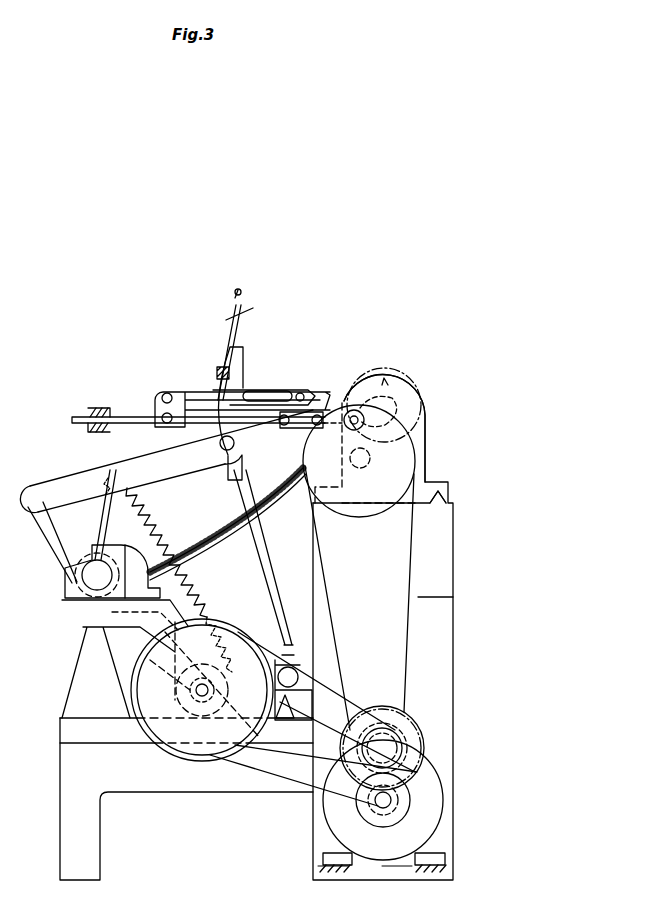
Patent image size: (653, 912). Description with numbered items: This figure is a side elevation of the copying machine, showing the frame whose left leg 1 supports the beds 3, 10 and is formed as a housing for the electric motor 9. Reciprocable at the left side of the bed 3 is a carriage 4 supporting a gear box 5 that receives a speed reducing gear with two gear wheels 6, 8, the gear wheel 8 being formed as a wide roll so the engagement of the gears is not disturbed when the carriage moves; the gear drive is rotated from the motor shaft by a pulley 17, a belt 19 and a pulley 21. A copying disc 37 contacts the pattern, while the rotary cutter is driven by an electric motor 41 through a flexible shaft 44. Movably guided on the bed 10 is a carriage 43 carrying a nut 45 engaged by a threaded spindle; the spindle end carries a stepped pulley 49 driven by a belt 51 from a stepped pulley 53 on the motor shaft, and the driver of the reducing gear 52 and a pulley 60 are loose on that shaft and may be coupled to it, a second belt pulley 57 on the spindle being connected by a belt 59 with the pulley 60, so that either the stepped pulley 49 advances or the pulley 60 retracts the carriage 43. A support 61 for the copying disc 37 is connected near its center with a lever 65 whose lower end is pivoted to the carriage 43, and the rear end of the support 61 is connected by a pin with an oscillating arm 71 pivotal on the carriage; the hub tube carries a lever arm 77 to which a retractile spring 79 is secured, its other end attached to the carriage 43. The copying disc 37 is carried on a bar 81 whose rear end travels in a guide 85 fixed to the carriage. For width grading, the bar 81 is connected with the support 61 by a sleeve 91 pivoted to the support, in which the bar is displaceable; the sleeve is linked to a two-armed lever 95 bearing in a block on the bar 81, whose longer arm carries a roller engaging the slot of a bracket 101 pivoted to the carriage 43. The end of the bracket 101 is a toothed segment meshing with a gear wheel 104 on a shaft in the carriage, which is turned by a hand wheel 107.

The leg 1 is at (383, 627).
The bed 3 is at (435, 580).
The carriage 4 is at (447, 494).
The gear box 5 is at (426, 456).
The gear wheel 6 is at (406, 400).
The gear wheel 8 is at (364, 463).
The electric motor 9 is at (382, 855).
The bed 10 is at (186, 799).
The pulley 17 is at (370, 504).
The belt 19 is at (340, 656).
The pulley 21 is at (372, 806).
The copying disc 37 is at (352, 412).
The electric motor 41 is at (112, 571).
The carriage 43 is at (125, 659).
The flexible shaft 44 is at (212, 546).
The nut 45 is at (196, 690).
The stepped pulley 49 is at (175, 762).
The belt 51 is at (256, 762).
The reducing gear 52 is at (398, 797).
The stepped pulley 53 is at (382, 748).
The belt pulley 57 is at (178, 702).
The belt 59 is at (291, 790).
The pulley 60 is at (400, 802).
The support 61 is at (166, 461).
The lever 65 is at (258, 546).
The oscillating arm 71 is at (66, 524).
The lever arm 77 is at (106, 505).
The retractile spring 79 is at (179, 580).
The bar 81 is at (134, 416).
The guide 85 is at (98, 407).
The sleeve 91 is at (248, 432).
The two-armed lever 95 is at (193, 400).
The bracket 101 is at (247, 382).
The gear wheel 104 is at (218, 368).
The hand wheel 107 is at (248, 310).